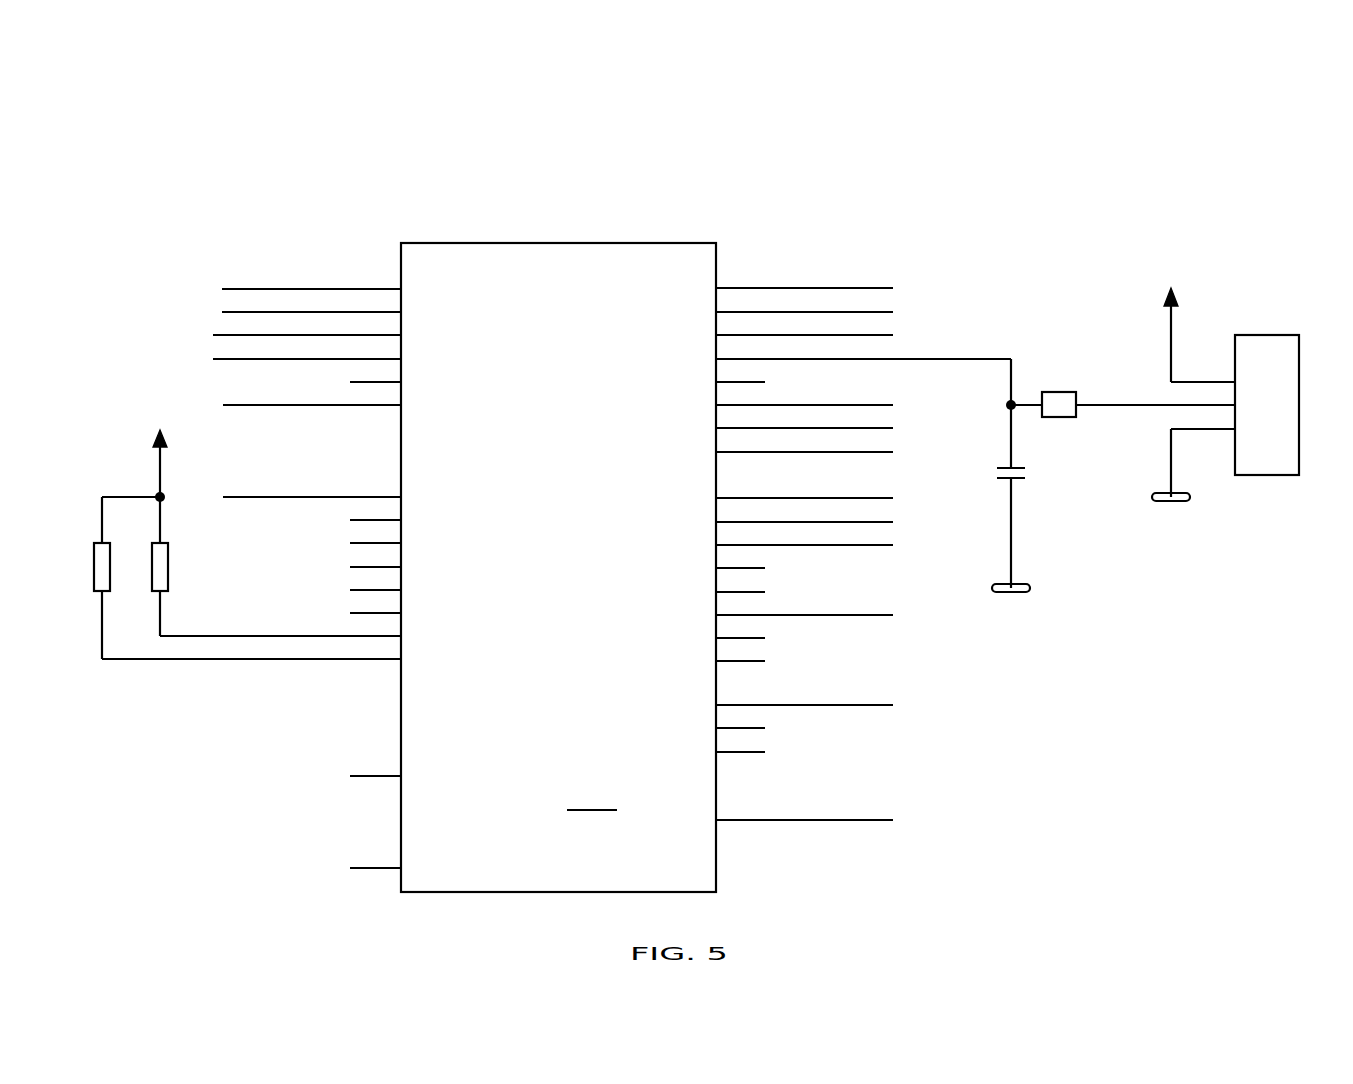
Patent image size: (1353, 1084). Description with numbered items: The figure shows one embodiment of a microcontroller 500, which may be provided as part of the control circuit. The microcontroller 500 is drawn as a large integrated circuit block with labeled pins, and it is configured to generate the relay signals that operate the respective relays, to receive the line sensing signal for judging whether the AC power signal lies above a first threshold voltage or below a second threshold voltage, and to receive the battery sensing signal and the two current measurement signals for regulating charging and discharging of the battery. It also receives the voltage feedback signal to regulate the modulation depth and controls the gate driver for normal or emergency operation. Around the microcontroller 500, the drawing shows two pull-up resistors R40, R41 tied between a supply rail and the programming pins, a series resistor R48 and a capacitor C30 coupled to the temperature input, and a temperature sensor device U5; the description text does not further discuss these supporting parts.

The microcontroller 500 is at (198, 77).
The pull-up resistor 10K R40 is at (121, 578).
The pull-up resistor 10K R41 is at (183, 566).
The series resistor 10K R48 is at (1123, 407).
The filter capacitor 100NF C30 is at (987, 475).
The temperature sensor MCP9701 U5 is at (1231, 361).